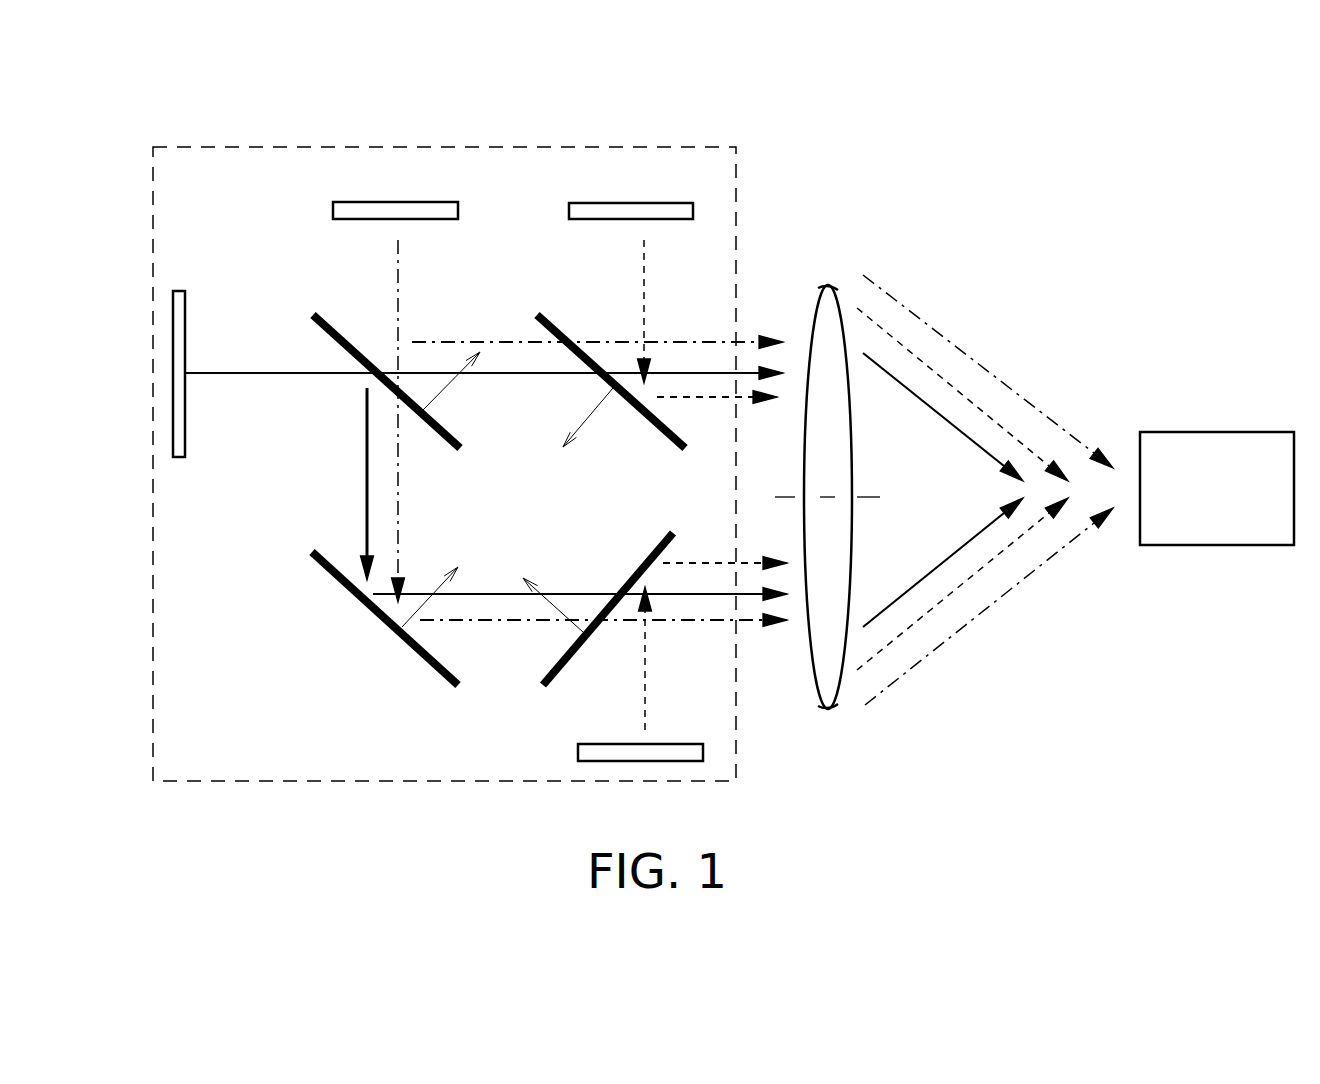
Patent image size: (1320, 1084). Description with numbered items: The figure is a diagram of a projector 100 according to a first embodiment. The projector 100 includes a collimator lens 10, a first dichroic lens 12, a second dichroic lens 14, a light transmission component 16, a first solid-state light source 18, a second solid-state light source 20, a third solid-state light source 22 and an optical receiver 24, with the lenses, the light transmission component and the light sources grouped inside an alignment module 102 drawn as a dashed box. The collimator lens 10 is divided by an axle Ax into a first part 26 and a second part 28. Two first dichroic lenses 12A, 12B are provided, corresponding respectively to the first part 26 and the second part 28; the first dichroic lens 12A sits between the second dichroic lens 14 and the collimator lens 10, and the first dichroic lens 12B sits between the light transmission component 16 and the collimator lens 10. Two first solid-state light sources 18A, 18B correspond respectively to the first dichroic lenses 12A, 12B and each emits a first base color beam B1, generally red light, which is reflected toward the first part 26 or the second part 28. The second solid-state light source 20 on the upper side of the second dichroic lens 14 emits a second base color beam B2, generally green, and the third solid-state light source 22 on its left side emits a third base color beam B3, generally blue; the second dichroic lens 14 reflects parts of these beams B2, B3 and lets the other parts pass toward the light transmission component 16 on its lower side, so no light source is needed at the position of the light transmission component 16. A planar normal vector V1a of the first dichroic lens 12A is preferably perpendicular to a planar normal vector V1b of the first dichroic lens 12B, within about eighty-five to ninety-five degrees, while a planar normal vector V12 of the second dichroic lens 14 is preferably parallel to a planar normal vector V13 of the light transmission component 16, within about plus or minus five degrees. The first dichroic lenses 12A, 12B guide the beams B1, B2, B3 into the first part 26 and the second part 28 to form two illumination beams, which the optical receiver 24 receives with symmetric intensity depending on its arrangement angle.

The projector 100 is at (1075, 185).
The alignment module 102 is at (195, 147).
The collimator lens 10 is at (830, 495).
The first dichroic lens 12 is at (606, 481).
The first dichroic lens 12A is at (568, 304).
The first dichroic lens 12B is at (652, 553).
The second dichroic lens 14 is at (325, 333).
The light transmission component 16 is at (325, 563).
The first solid-state light source 18 is at (585, 464).
The first solid-state light source 18A is at (592, 203).
The first solid-state light source 18B is at (592, 744).
The second solid-state light source 20 is at (360, 203).
The third solid-state light source 22 is at (175, 292).
The optical receiver 24 is at (1217, 488).
The first part 26 is at (830, 307).
The second part 28 is at (828, 697).
The first base color beam B1 is at (661, 485).
The second base color beam B2 is at (414, 421).
The third base color beam B3 is at (484, 386).
The planar normal vector V12 is at (460, 383).
The planar normal vector V13 is at (439, 580).
The planar normal vector V1a is at (599, 420).
The planar normal vector V1b is at (544, 616).
The axle Ax is at (847, 501).